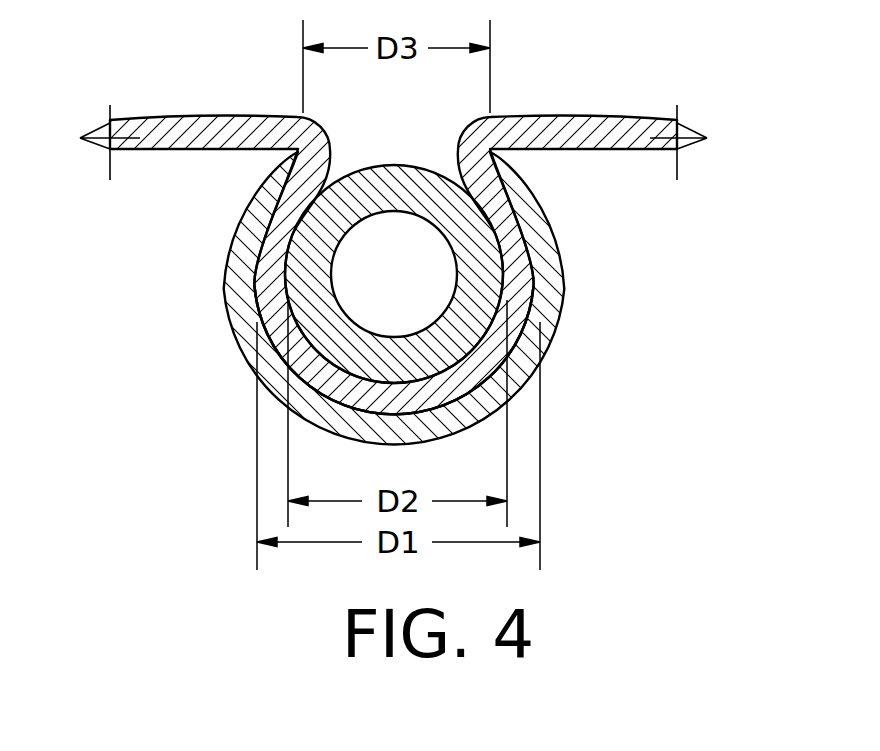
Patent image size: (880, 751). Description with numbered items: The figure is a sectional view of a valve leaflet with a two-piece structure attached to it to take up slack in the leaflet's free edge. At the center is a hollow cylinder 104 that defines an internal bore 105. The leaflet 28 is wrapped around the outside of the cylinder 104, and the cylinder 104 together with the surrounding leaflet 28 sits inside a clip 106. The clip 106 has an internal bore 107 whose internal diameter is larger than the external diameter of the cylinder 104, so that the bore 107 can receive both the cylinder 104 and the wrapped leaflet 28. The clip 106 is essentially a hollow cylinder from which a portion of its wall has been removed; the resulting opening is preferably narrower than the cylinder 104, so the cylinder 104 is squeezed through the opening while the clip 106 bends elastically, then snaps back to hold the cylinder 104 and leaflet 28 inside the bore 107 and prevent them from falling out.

The leaflet 28 is at (588, 116).
The hollow cylinder 104 is at (383, 186).
The internal bore 105 is at (440, 236).
The clip 106 is at (553, 290).
The internal bore 107 is at (530, 314).